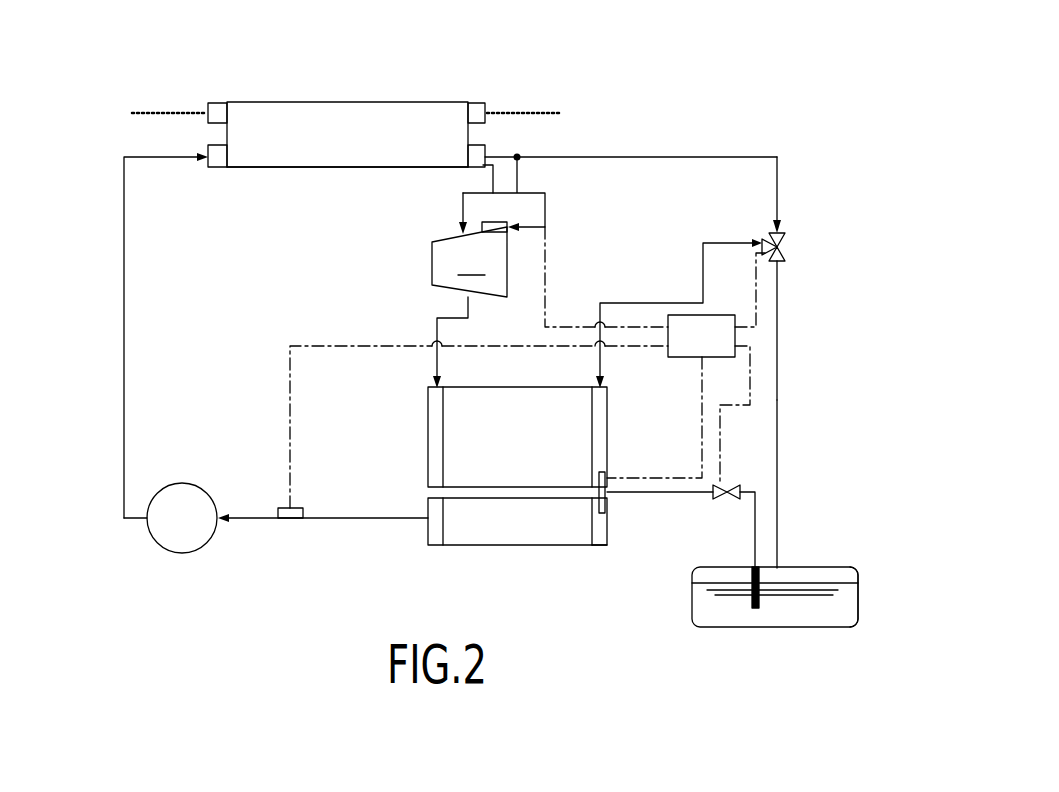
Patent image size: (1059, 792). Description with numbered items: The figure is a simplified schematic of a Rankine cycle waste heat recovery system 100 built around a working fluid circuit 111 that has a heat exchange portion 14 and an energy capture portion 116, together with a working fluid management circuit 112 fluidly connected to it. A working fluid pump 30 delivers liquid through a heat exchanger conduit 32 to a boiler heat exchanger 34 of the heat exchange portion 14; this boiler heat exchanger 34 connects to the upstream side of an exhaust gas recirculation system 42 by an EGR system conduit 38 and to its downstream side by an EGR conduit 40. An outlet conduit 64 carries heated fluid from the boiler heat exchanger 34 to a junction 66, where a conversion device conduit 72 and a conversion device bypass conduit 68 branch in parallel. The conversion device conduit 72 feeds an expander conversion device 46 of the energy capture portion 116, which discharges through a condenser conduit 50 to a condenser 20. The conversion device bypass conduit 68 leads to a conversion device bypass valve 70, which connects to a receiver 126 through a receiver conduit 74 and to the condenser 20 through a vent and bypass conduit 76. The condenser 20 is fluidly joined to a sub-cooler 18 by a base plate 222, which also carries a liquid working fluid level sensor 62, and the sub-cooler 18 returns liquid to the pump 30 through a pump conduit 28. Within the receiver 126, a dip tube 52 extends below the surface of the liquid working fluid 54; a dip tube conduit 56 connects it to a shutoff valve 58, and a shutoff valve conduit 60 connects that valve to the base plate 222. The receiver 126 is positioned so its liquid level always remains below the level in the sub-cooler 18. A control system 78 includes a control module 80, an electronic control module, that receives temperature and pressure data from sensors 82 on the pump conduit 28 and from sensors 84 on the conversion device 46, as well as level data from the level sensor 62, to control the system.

The Rankine cycle waste heat recovery system 100 is at (736, 62).
The heat exchange portion 14 is at (355, 85).
The EGR conduit 40 is at (165, 112).
The EGR system conduit 38 is at (530, 112).
The exhaust gas recirculation system 42 is at (130, 118).
The boiler heat exchanger 34 is at (328, 167).
The heat exchanger conduit 32 is at (124, 280).
The working fluid circuit 111 is at (100, 322).
The energy capture portion 116 is at (376, 273).
The working fluid pump 30 is at (190, 552).
The pump conduit 28 is at (368, 520).
The sensors 82 is at (290, 508).
The junction 66 is at (520, 155).
The conversion device conduit 72 is at (520, 185).
The outlet conduit 64 is at (493, 168).
The conversion device bypass conduit 68 is at (725, 157).
The conversion device bypass valve 70 is at (786, 250).
The vent and bypass conduit 76 is at (723, 243).
The control system 78 is at (795, 354).
The receiver conduit 74 is at (780, 400).
The expander conversion device 46 is at (469, 262).
The sensors 84 is at (498, 222).
The condenser conduit 50 is at (450, 318).
The control module 80 is at (688, 357).
The condenser 20 is at (428, 440).
The sub-cooler 18 is at (477, 545).
The base plate 222 is at (598, 545).
The liquid working fluid level sensor 62 is at (608, 505).
The shutoff valve conduit 60 is at (668, 492).
The shutoff valve 58 is at (730, 485).
The dip tube conduit 56 is at (757, 522).
The liquid working fluid 54 is at (788, 612).
The receiver 126 is at (863, 597).
The dip tube 52 is at (735, 606).
The working fluid management circuit 112 is at (690, 656).